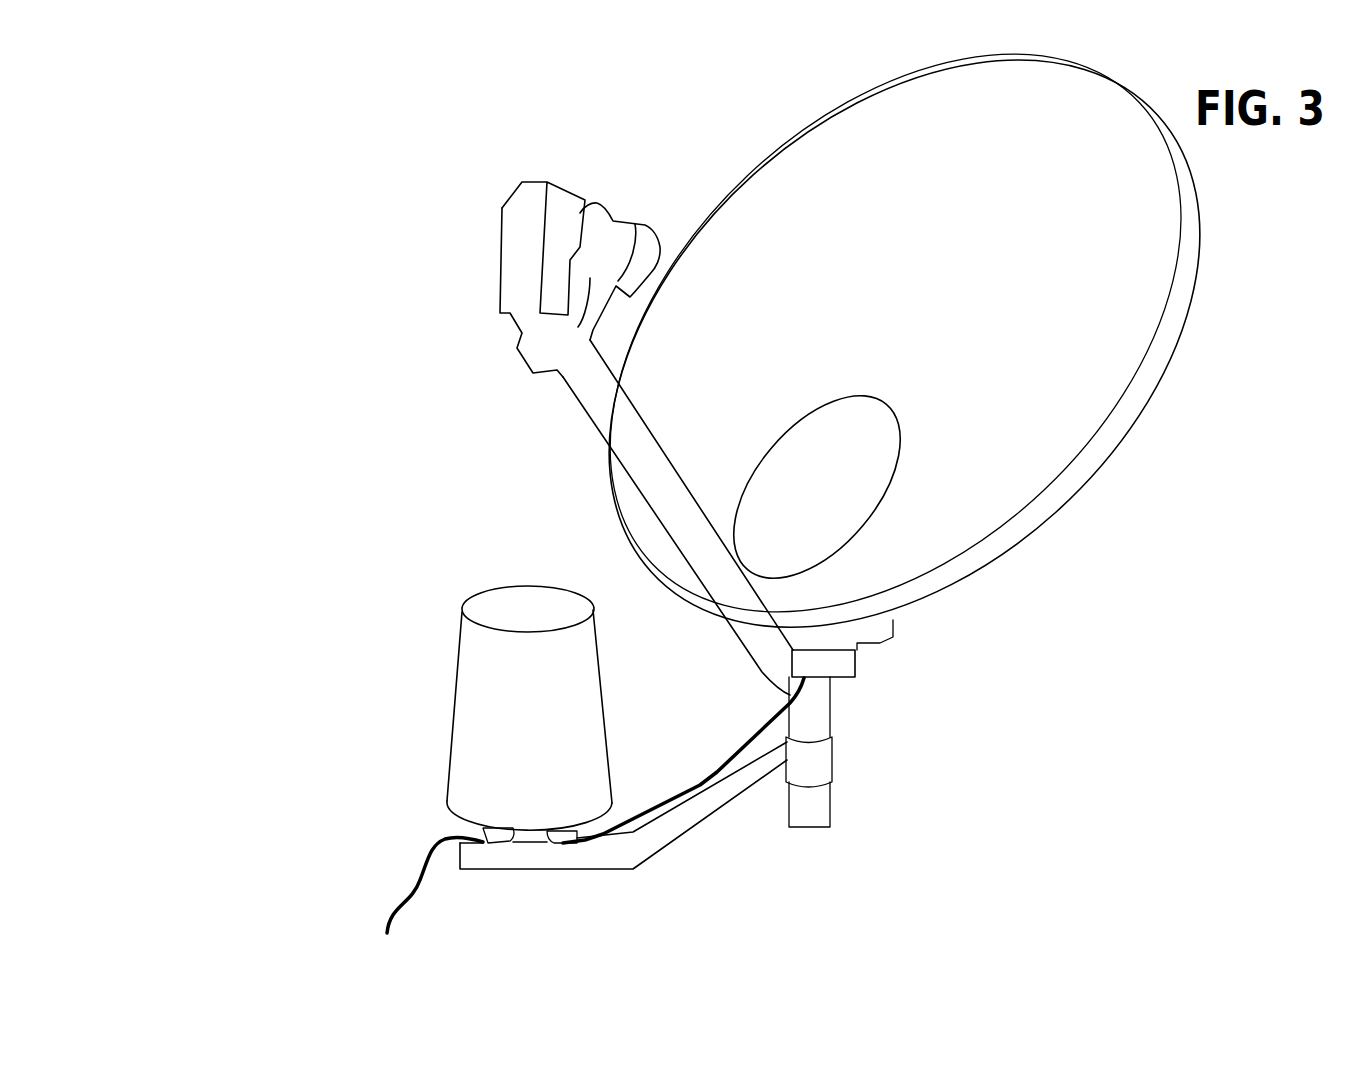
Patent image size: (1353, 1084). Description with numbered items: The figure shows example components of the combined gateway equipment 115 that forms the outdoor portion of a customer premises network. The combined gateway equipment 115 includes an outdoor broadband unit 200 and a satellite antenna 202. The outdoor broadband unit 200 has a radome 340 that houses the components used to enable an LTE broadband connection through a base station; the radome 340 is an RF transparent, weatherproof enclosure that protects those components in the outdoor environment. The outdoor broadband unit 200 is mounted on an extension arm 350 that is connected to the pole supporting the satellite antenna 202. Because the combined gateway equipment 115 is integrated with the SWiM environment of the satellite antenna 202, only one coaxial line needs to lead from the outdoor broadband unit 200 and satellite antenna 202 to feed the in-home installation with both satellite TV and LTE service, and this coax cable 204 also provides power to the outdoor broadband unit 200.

The combined gateway equipment 115 is at (178, 96).
The outdoor broadband unit 200 is at (420, 526).
The satellite antenna 202 is at (1029, 538).
The coax cable 204 is at (418, 877).
The radome 340 is at (462, 626).
The extension arm 350 is at (711, 822).